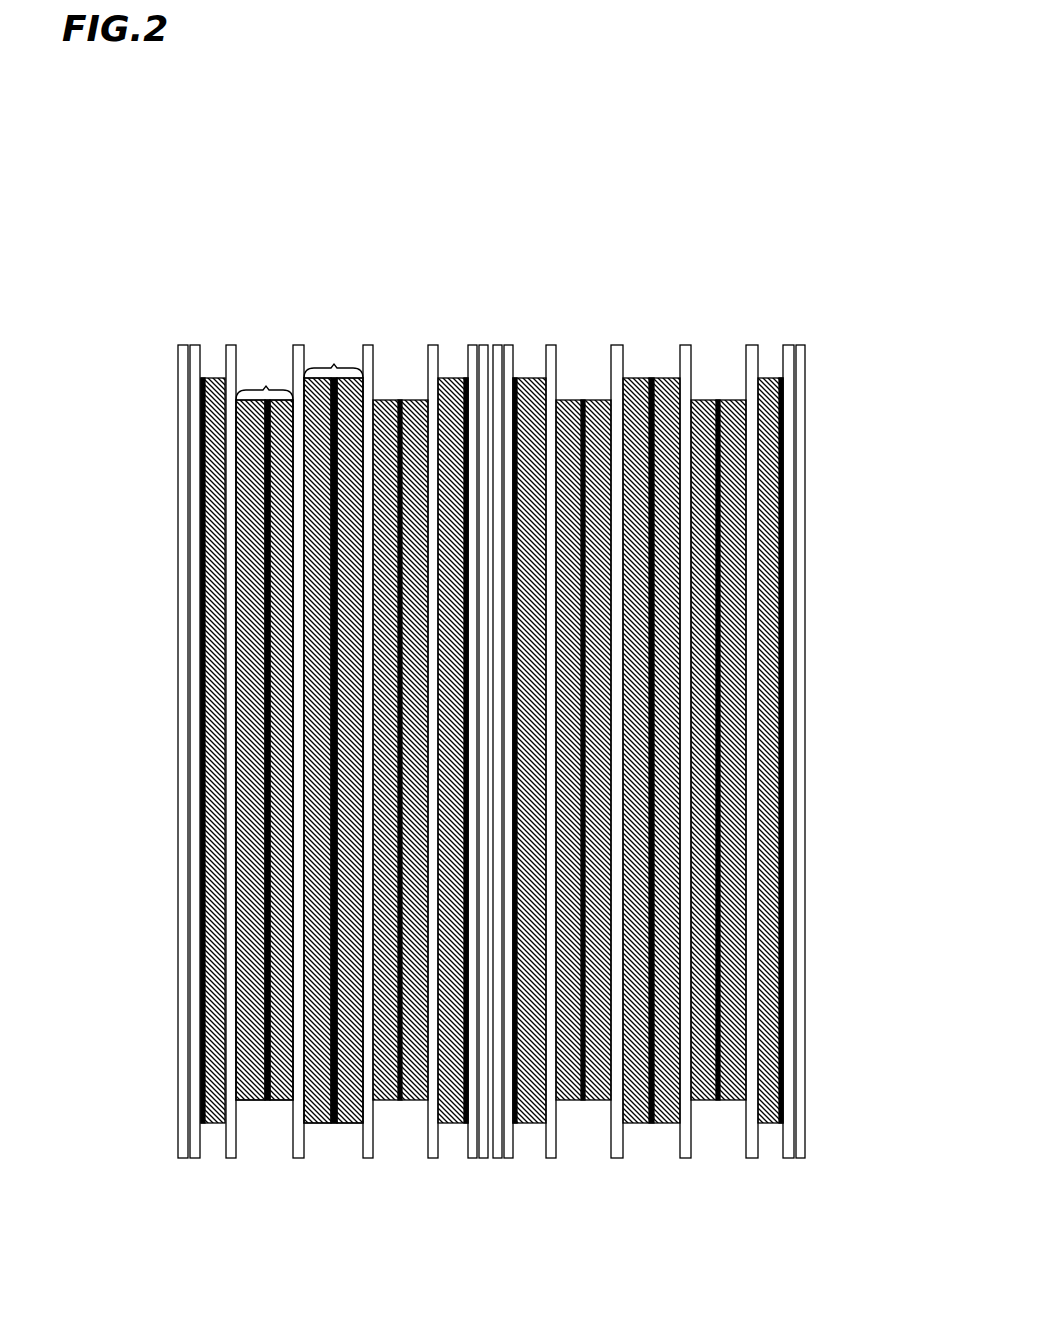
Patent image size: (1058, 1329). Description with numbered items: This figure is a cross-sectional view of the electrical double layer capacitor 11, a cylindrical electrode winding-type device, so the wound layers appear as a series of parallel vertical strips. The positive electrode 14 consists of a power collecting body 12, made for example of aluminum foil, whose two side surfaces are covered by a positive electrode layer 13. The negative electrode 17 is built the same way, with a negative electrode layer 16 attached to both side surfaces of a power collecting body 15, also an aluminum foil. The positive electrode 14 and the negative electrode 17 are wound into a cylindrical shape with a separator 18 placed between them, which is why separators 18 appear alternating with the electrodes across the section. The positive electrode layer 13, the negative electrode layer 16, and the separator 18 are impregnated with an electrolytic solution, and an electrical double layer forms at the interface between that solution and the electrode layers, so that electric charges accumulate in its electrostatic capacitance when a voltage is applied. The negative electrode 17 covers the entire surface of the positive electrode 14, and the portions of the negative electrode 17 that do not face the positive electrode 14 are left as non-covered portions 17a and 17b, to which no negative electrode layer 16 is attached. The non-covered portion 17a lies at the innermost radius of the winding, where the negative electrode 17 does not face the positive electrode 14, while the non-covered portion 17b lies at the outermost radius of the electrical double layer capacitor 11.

The electrical double layer capacitor 11 is at (530, 106).
The power collecting body 12 is at (262, 1082).
The positive electrode layer 13 is at (283, 1093).
The positive electrode 14 is at (258, 380).
The power collecting body 15 is at (330, 1063).
The negative electrode layer 16 is at (347, 1117).
The negative electrode 17 is at (327, 360).
The non-covered portion 17a is at (527, 370).
The non-covered portion 17b is at (208, 370).
The separator 18 is at (617, 337).